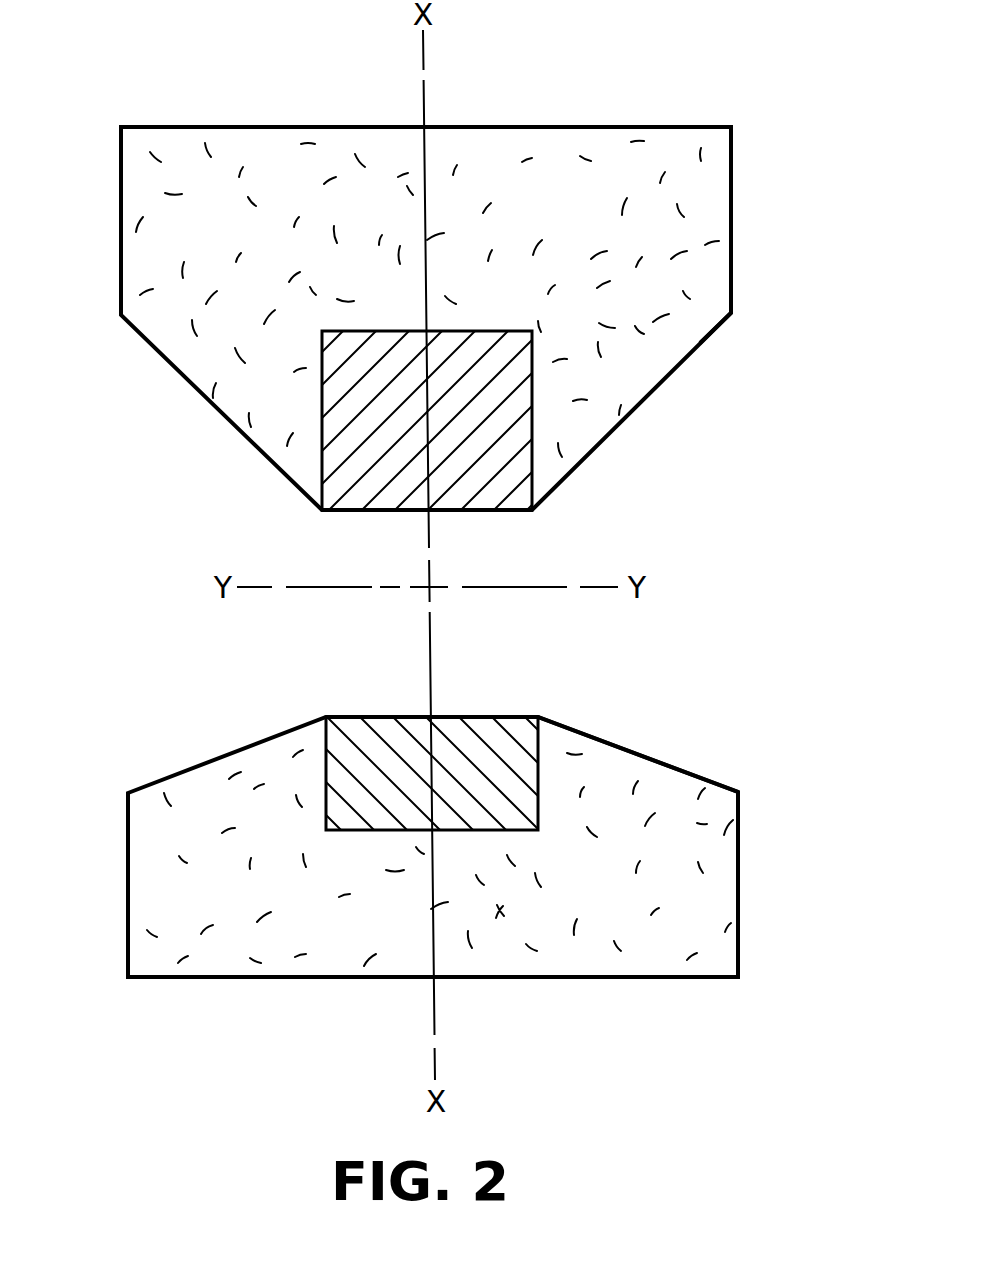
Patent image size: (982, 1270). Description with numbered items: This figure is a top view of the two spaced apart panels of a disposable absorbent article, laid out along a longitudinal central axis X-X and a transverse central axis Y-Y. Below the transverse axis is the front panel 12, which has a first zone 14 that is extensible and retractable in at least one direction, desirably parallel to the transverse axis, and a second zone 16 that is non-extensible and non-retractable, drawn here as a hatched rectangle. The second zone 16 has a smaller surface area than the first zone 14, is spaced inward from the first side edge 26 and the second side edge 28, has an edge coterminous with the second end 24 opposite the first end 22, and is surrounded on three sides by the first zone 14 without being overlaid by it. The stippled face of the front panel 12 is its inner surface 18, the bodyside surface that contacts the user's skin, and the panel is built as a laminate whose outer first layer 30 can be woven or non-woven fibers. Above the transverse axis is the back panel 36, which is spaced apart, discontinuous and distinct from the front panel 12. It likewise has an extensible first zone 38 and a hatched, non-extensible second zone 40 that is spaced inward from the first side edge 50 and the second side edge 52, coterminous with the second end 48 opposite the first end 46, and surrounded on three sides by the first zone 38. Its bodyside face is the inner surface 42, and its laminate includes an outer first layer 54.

The front panel 12 is at (705, 774).
The first zone 14 is at (725, 828).
The second zone 16 is at (517, 722).
The inner surface 18 is at (613, 890).
The first end 22 is at (575, 977).
The second end 24 is at (470, 717).
The first side edge 26 is at (128, 890).
The second side edge 28 is at (738, 868).
The first layer 30 is at (725, 945).
The back panel 36 is at (662, 122).
The first zone 38 is at (715, 220).
The second zone 40 is at (500, 490).
The inner surface 42 is at (573, 223).
The first end 46 is at (500, 127).
The second end 48 is at (455, 511).
The first side edge 50 is at (121, 250).
The second side edge 52 is at (732, 175).
The first layer 54 is at (713, 270).